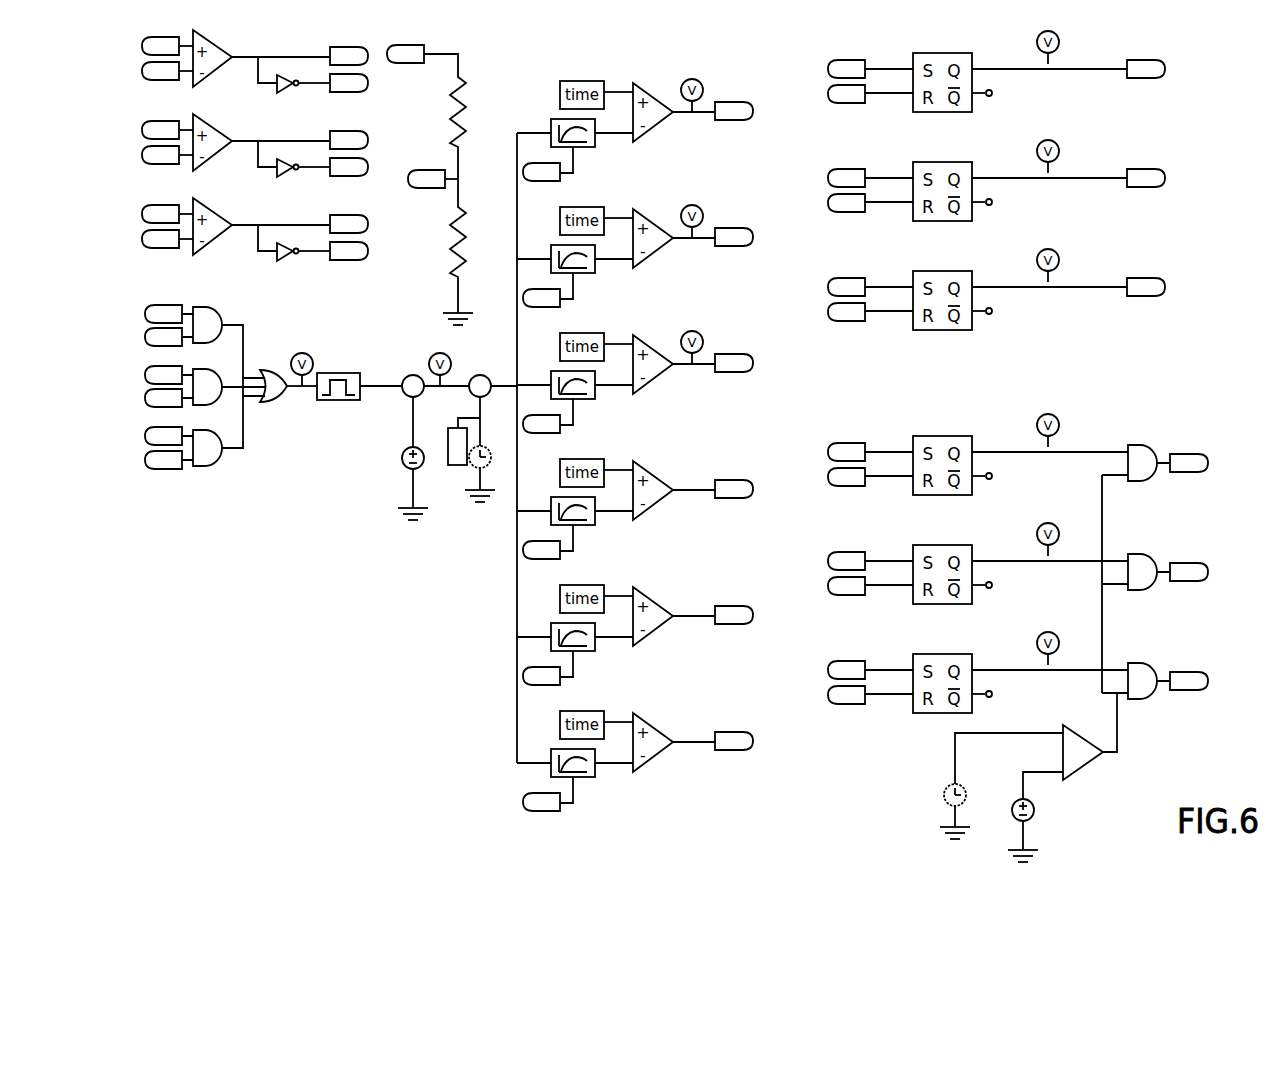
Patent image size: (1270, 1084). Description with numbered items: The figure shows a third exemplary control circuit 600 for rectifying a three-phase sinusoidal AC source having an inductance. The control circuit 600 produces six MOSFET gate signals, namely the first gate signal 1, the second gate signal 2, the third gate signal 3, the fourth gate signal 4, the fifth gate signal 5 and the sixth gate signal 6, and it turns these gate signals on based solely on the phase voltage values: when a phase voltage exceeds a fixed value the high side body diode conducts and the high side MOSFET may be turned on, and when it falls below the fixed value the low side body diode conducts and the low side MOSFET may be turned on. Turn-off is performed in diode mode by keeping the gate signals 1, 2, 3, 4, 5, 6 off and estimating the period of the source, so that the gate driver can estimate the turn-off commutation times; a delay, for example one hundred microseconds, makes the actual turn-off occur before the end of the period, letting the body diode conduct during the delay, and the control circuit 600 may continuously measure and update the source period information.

The control circuit 600 is at (285, 678).
The gate signal Q1 1 is at (1146, 69).
The gate signal Q2 2 is at (1189, 463).
The gate signal Q3 3 is at (1146, 178).
The gate signal Q4 4 is at (1189, 572).
The gate signal Q5 5 is at (1146, 287).
The gate signal Q6 6 is at (1189, 681).